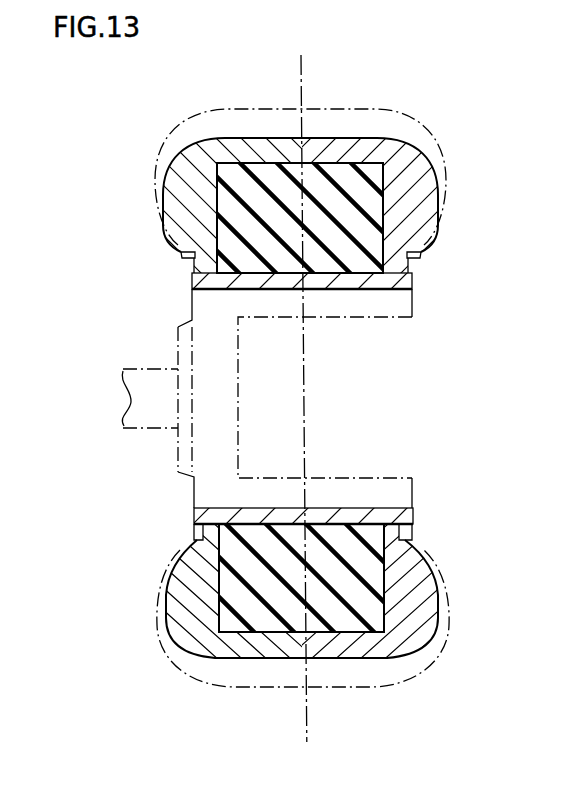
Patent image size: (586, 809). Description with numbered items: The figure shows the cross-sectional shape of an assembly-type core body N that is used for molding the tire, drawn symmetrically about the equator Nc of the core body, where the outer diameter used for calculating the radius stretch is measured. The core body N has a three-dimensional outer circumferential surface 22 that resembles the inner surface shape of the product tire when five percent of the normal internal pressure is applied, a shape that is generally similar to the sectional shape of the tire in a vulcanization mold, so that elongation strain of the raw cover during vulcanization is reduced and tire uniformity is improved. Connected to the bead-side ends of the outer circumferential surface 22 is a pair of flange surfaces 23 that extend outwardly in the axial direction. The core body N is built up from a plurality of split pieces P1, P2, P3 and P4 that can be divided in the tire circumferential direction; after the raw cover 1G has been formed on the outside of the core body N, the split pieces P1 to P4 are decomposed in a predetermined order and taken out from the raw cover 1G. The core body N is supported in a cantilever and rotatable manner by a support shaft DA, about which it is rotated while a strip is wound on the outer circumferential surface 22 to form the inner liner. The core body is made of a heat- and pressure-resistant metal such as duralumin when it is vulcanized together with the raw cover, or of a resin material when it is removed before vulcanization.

The equator of core body NC is at (301, 86).
The raw cover 1G is at (398, 105).
The core body N is at (441, 130).
The outer circumferential surface 22 is at (197, 143).
The flange surfaces 23 is at (183, 255).
The split piece P4 is at (180, 193).
The split piece P3 is at (423, 193).
The split piece P2 is at (352, 228).
The split piece P1 is at (400, 284).
The support shaft DA is at (150, 362).